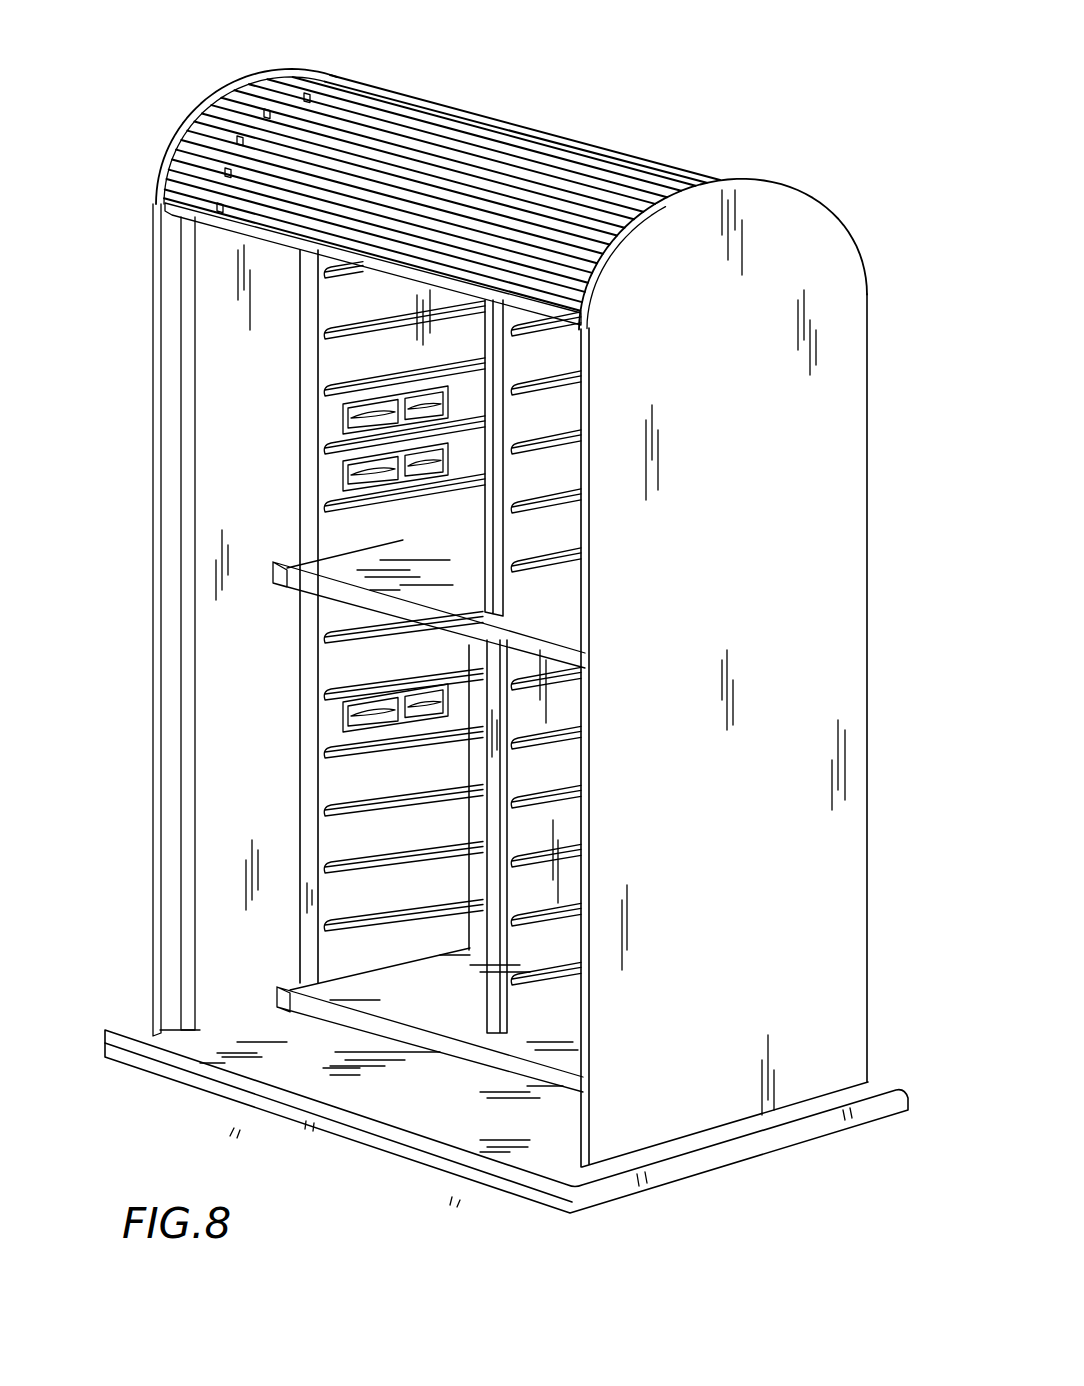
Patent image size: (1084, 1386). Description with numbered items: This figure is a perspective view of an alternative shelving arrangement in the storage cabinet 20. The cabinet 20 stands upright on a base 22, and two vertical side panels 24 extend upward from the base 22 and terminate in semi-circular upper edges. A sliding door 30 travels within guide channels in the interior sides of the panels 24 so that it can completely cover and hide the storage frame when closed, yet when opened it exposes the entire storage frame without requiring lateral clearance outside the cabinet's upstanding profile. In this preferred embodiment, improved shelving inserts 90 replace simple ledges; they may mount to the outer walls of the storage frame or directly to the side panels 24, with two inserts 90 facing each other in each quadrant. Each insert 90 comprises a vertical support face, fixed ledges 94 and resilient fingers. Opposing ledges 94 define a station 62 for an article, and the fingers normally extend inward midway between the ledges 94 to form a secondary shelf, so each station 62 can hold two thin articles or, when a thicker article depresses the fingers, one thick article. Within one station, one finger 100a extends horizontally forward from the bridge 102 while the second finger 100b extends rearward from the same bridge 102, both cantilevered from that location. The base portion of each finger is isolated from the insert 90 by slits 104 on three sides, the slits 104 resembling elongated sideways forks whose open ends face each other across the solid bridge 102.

The storage cabinet 20 is at (661, 114).
The base 22 is at (722, 1153).
The side panel 24 is at (792, 497).
The sliding door 30 is at (495, 118).
The station 62 is at (360, 780).
The shelving insert 90 is at (342, 655).
The fixed ledge 94 is at (361, 847).
The finger 100a is at (373, 472).
The finger 100b is at (433, 463).
The bridge 102 is at (402, 400).
The slit 104 is at (340, 497).